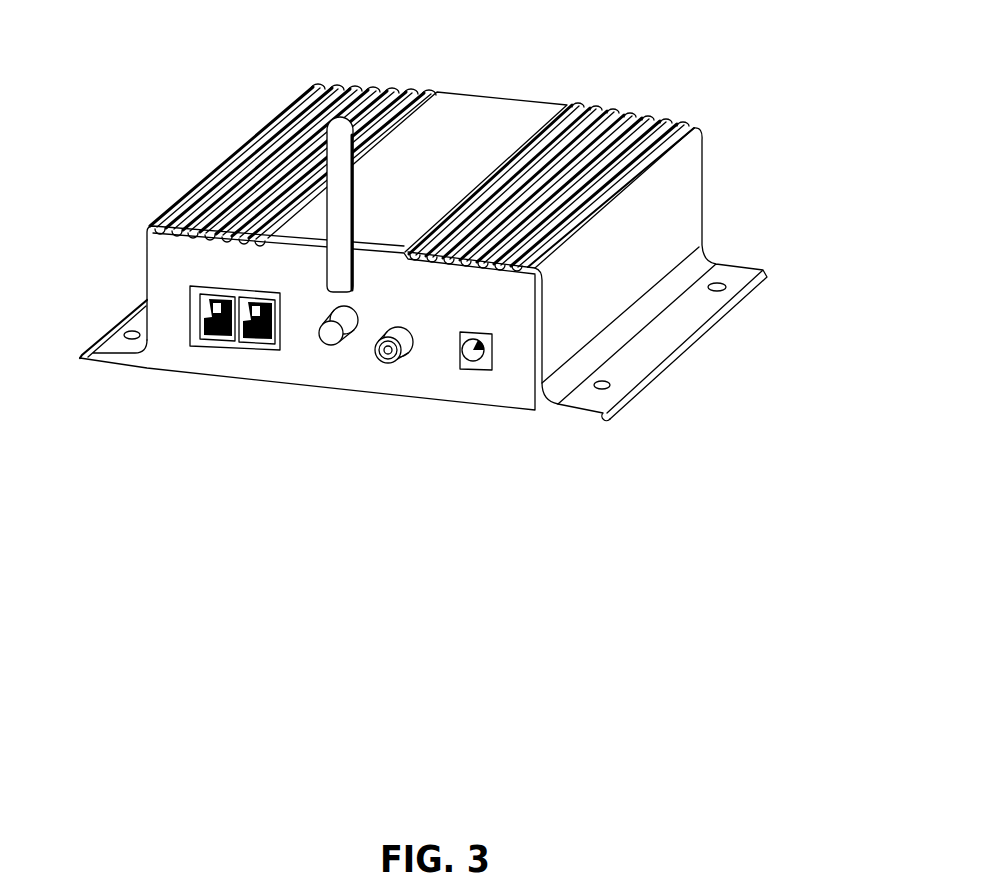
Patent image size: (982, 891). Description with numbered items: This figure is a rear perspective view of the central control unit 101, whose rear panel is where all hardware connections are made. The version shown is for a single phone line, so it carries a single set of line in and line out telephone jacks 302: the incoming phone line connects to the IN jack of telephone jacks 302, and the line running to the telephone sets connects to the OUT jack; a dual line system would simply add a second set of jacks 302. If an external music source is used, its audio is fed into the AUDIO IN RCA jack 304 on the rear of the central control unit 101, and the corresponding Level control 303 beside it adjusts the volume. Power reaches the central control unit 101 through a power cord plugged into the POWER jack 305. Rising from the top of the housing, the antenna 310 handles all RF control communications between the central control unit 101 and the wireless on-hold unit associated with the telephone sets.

The central control unit 101 is at (435, 273).
The line in and line out telephone jacks 302 is at (187, 312).
The Level control 303 is at (318, 345).
The AUDIO IN RCA jack 304 is at (380, 368).
The POWER jack 305 is at (473, 377).
The antenna 310 is at (343, 148).